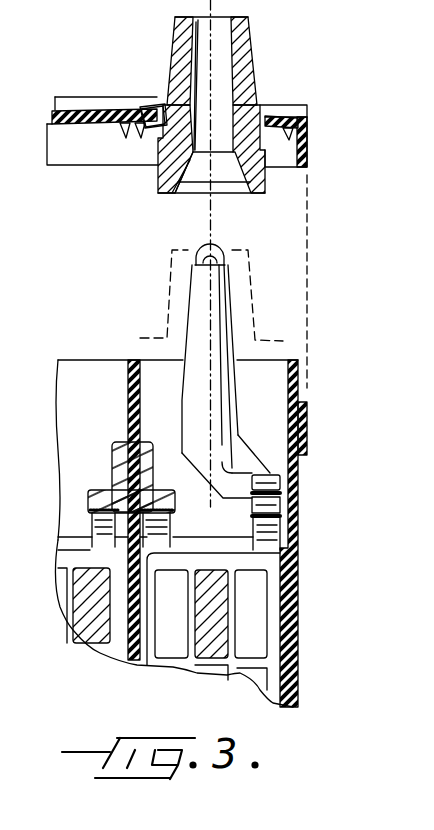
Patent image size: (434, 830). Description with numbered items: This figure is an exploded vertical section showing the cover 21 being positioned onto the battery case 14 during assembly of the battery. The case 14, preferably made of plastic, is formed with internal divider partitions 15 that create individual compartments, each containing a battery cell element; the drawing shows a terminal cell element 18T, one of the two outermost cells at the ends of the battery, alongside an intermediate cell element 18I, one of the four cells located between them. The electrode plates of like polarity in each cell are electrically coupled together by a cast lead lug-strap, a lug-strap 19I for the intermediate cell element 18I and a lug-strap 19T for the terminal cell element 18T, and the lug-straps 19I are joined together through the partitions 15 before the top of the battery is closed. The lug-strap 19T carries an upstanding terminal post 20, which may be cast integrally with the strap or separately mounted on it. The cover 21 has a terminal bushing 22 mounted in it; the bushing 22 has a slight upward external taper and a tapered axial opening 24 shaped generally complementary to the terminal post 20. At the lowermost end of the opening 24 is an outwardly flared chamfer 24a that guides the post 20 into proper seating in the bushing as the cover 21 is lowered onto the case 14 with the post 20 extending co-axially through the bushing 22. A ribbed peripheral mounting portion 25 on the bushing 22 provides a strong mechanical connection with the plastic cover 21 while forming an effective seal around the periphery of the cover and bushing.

The case 14 is at (297, 572).
The internal divider partitions 15 is at (128, 400).
The intermediate cell elements 18I is at (95, 627).
The terminal cell elements 18T is at (257, 628).
The lug-strap 19I is at (160, 483).
The lug-strap 19T is at (278, 493).
The terminal post 20 is at (218, 248).
The cover 21 is at (307, 133).
The terminal bushing 22 is at (243, 62).
The tapered axial opening 24 is at (196, 74).
The outwardly flared chamfer 24a is at (197, 173).
The ribbed peripheral mounting portion 25 is at (168, 115).